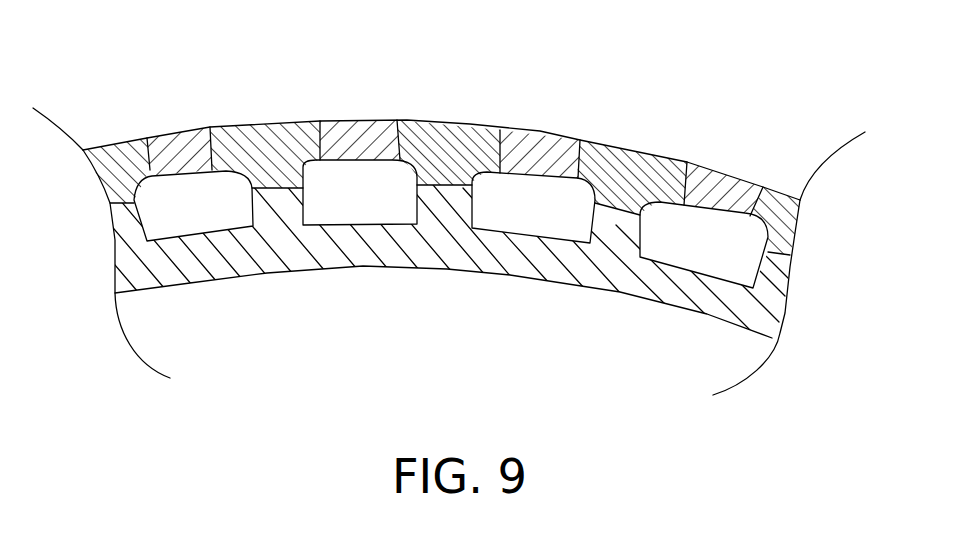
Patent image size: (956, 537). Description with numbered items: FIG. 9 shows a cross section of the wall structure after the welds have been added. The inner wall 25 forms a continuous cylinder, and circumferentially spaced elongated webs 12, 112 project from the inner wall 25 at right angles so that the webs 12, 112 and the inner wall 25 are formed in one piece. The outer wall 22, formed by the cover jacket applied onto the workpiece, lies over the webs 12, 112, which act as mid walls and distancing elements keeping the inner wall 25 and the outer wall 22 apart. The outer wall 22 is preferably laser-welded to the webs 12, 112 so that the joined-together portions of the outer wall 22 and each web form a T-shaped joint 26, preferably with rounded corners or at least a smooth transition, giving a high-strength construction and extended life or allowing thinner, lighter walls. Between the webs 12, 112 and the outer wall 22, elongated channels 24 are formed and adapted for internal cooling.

The web 12 is at (273, 200).
The web 112 is at (455, 203).
The outer wall 22 is at (339, 121).
The elongated channel 24 is at (373, 192).
The inner wall 25 is at (260, 262).
The T-shaped joint 26 is at (468, 128).